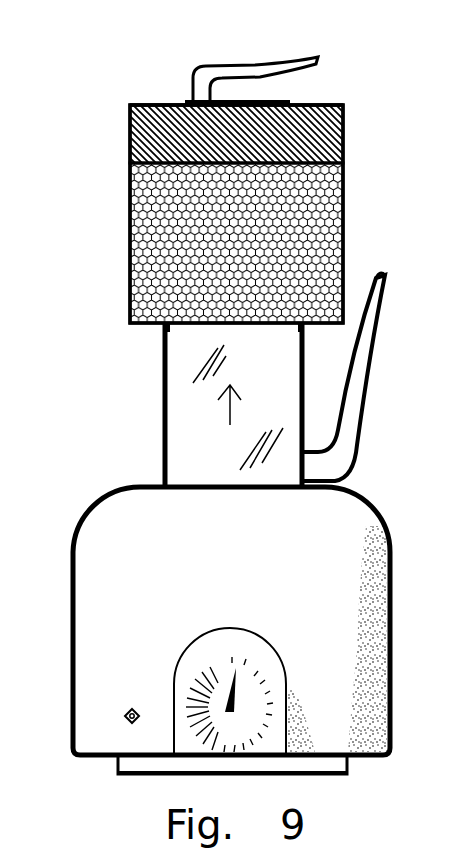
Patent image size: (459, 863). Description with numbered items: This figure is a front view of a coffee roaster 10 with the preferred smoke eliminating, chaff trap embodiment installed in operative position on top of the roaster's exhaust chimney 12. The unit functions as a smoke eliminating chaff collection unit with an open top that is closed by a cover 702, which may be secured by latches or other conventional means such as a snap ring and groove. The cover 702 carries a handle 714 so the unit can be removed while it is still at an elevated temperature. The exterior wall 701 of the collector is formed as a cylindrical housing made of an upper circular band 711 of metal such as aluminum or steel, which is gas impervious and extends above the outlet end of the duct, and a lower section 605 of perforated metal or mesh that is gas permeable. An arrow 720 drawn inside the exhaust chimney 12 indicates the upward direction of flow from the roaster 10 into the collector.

The coffee roaster 10 is at (78, 540).
The exhaust chimney 12 is at (165, 400).
The lower section 605 is at (143, 252).
The exterior wall 701 is at (345, 205).
The cover 702 is at (323, 104).
The upper circular band 711 is at (143, 150).
The handle 714 is at (255, 62).
The air flow direction arrow 720 is at (228, 405).